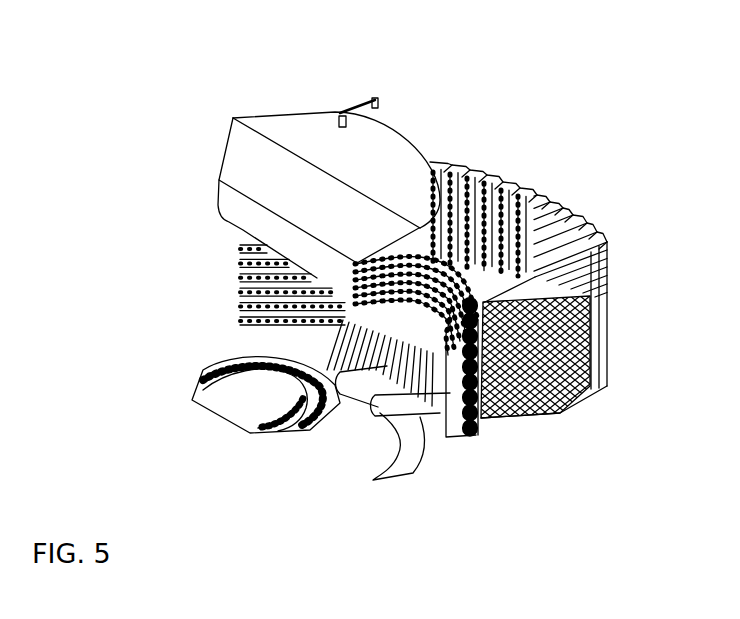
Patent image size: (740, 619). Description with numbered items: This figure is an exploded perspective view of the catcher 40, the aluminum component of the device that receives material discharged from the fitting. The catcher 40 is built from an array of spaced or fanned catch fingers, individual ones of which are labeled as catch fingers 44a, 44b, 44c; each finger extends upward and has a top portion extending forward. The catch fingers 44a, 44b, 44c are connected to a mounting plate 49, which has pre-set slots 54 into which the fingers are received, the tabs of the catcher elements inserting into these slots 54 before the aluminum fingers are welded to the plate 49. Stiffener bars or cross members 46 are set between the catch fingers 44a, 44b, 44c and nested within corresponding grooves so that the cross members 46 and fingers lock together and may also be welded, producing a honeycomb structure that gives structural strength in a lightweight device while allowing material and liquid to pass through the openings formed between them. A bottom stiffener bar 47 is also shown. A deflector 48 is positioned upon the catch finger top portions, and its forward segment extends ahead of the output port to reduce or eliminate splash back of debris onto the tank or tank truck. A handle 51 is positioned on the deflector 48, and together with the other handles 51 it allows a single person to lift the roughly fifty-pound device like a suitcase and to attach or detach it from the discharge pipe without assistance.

The catcher 40 is at (557, 83).
The catch finger 44a is at (587, 368).
The core lamination section 44b is at (593, 340).
The core lamination section 44c is at (600, 315).
The cross member 46 is at (240, 292).
The bottom stiffener bar 47 is at (408, 467).
The deflector 48 is at (290, 140).
The mounting plate 49 is at (240, 413).
The handle 51 is at (355, 97).
The slot 54 is at (217, 370).